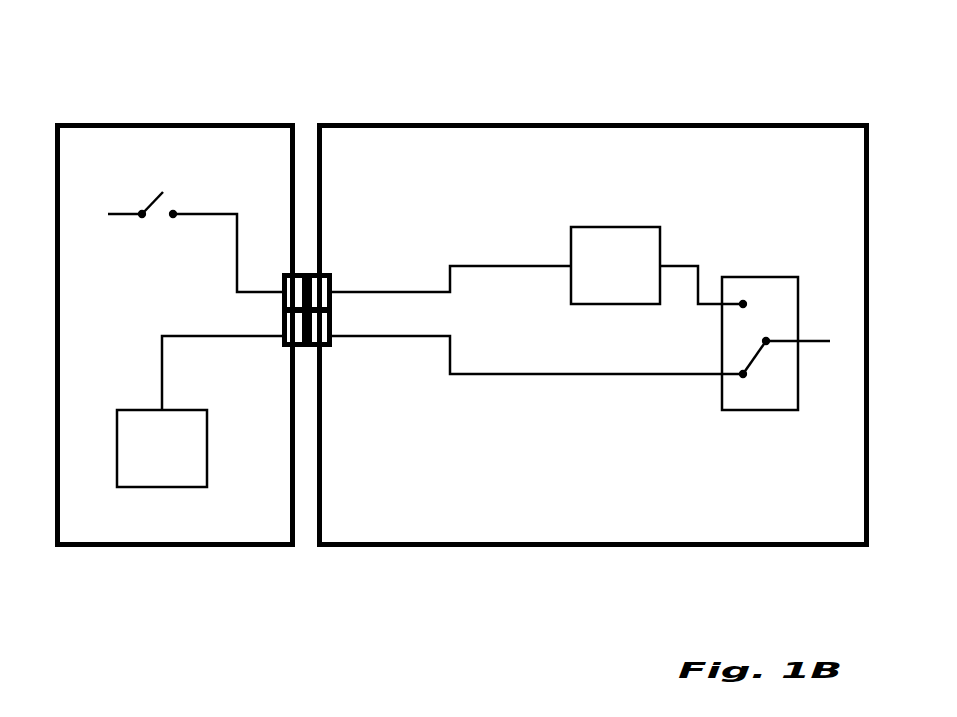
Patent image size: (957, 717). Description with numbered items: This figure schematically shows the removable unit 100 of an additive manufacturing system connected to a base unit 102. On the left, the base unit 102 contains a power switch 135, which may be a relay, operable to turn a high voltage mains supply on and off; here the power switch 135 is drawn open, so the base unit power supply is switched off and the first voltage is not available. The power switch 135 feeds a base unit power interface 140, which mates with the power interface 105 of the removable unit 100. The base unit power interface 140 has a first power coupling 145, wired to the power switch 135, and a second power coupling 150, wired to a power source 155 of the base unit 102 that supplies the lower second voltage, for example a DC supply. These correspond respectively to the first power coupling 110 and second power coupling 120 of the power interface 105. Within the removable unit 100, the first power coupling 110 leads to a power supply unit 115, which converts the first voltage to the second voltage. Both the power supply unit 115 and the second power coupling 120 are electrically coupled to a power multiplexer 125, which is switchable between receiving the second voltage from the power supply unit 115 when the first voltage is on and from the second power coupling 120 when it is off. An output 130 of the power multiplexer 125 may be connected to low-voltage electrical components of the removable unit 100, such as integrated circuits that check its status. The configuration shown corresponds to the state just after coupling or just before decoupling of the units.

The removable unit 100 is at (669, 98).
The base unit 102 is at (160, 98).
The power interface 105 is at (289, 290).
The first power coupling 110 is at (332, 272).
The power supply unit 115 is at (537, 265).
The second power coupling 120 is at (332, 347).
The power multiplexer 125 is at (760, 277).
The output of the power multiplexer 130 is at (823, 330).
The power switch 135 is at (183, 190).
The base unit power interface 140 is at (258, 314).
The first power coupling of the base unit 145 is at (282, 273).
The second power coupling of the base unit 150 is at (282, 347).
The power source 155 is at (199, 411).